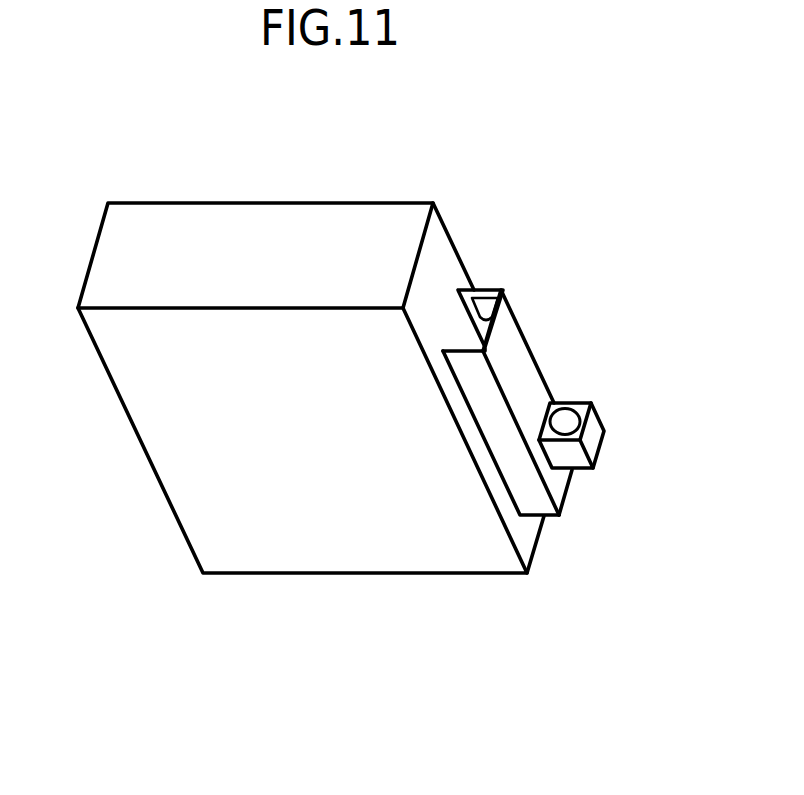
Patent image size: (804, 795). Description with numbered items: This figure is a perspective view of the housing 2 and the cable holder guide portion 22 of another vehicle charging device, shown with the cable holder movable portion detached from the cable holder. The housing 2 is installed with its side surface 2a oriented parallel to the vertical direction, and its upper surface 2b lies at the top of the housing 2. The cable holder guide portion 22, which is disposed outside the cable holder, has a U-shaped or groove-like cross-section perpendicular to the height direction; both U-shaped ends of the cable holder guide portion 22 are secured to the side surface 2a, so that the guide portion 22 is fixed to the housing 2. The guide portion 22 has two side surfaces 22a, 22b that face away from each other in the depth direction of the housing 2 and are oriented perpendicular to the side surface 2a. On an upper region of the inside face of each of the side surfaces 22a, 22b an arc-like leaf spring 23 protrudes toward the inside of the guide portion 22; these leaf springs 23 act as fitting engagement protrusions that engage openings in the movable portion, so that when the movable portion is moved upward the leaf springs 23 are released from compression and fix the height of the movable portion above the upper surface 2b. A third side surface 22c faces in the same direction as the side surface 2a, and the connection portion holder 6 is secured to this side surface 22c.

The housing 2 is at (357, 355).
The side surface of the housing 2a is at (527, 539).
The upper surface of the housing 2b is at (197, 232).
The cable holder guide portion 22 is at (535, 388).
The side surface of the cable holder guide portion 22a is at (512, 468).
The side surface of the cable holder guide portion 22b is at (480, 288).
The side surface of the cable holder guide portion 22c is at (524, 387).
The leaf spring 23 is at (477, 312).
The connection portion holder 6 is at (594, 438).